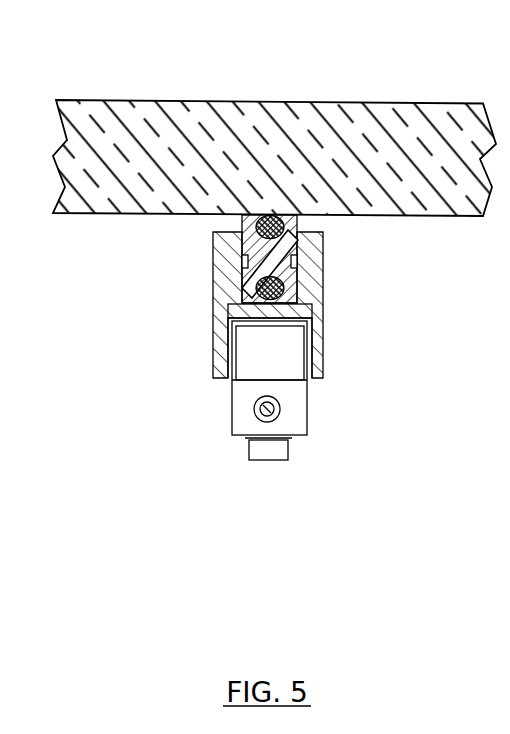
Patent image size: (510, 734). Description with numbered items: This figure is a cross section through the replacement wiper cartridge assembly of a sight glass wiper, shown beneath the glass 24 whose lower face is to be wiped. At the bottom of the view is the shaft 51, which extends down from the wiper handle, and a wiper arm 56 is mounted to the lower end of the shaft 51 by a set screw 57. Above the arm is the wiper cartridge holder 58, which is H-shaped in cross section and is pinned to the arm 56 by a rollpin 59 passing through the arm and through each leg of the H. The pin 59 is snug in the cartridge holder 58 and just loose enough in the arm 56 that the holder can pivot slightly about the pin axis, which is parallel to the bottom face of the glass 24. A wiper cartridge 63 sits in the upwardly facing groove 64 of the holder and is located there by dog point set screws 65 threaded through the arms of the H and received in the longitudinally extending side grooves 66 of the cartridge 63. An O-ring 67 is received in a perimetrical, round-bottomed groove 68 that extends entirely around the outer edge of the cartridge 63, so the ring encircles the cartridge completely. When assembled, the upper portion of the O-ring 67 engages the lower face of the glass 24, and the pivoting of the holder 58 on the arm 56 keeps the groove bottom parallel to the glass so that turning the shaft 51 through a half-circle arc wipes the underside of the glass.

The glass 24 is at (208, 137).
The shaft 51 is at (268, 460).
The wiper arm 56 is at (270, 357).
The set screw 57 is at (278, 415).
The wiper cartridge holder 58 is at (315, 310).
The rollpin 59 is at (220, 358).
The wiper cartridge 63 is at (296, 232).
The upwardly facing groove 64 is at (298, 222).
The dog point set screws 65 is at (242, 260).
The side grooves 66 is at (243, 277).
The O-ring 67 is at (238, 303).
The perimetrical round-bottomed groove 68 is at (243, 248).